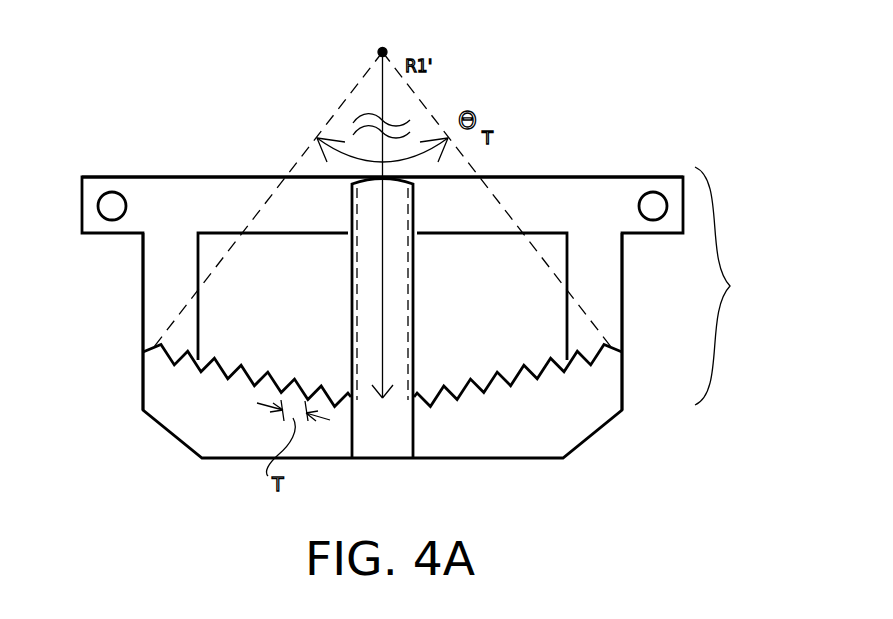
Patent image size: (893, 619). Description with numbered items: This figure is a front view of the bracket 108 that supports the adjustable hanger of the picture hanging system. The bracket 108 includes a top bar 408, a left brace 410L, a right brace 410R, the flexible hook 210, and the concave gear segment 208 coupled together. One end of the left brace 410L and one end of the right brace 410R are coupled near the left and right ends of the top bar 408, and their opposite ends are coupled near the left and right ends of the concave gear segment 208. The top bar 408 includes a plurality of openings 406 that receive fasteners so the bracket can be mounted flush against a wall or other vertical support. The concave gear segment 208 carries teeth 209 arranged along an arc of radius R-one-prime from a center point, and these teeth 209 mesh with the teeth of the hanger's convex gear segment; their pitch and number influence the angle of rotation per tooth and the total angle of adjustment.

The bracket 108 is at (733, 286).
The concave gear segment 208 is at (590, 417).
The teeth 209 is at (270, 377).
The flexible hook 210 is at (382, 420).
The openings 406 is at (113, 203).
The top bar 408 is at (227, 203).
The left brace 410L is at (155, 298).
The right brace 410R is at (573, 338).